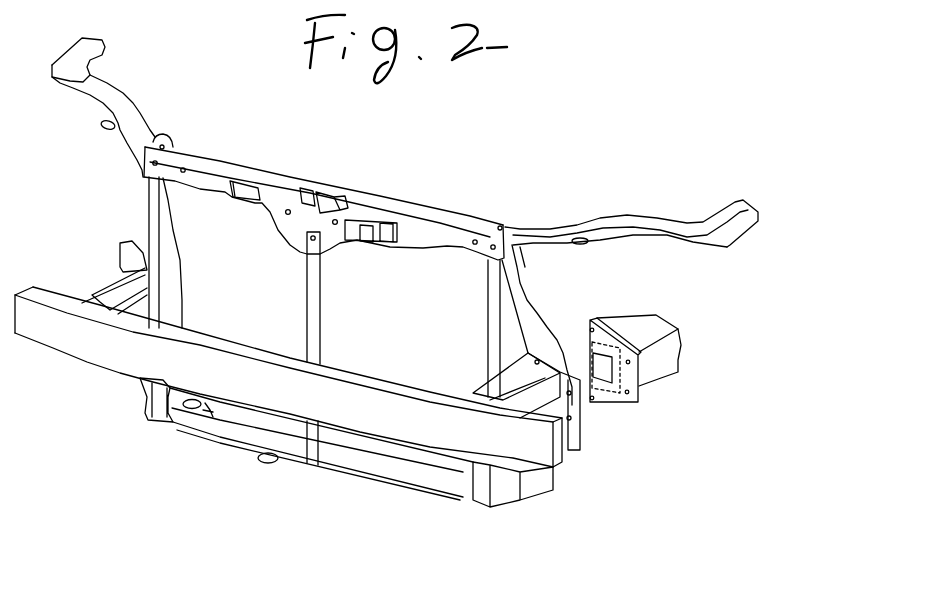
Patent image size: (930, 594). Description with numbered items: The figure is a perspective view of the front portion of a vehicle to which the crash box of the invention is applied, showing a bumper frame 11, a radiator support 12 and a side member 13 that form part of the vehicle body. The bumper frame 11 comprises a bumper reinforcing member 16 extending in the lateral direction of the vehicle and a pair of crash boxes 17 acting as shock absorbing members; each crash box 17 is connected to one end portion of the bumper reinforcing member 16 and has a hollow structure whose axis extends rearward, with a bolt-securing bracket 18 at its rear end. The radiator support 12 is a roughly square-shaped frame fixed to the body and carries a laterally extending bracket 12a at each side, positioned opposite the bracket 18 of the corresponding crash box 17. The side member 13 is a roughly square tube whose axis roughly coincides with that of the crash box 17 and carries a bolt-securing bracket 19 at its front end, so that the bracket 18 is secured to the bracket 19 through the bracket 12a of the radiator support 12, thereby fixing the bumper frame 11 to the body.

The bumper frame 11 is at (217, 362).
The radiator support 12 is at (413, 228).
The bracket 12a is at (142, 255).
The side member 13 is at (660, 363).
The bumper reinforcing member 16 is at (334, 400).
The crash box 17 is at (100, 303).
The bracket 18 is at (116, 268).
The bracket 19 is at (615, 403).